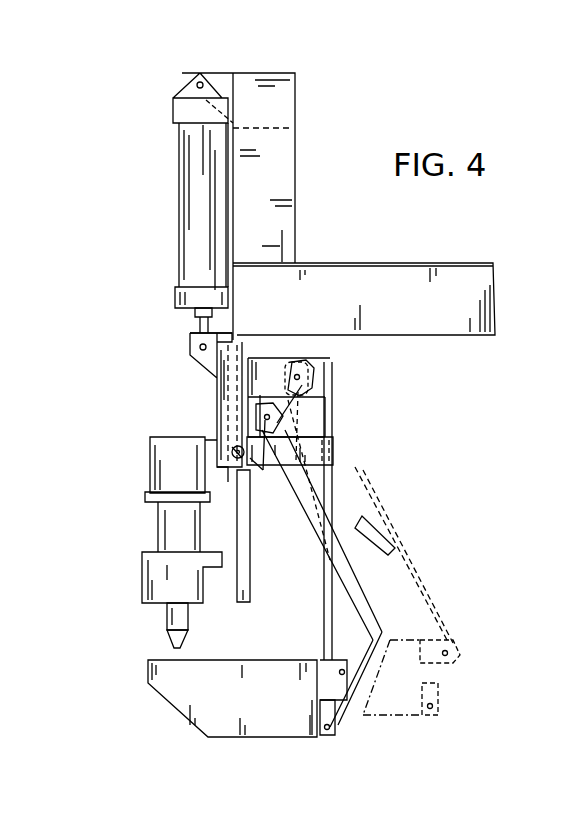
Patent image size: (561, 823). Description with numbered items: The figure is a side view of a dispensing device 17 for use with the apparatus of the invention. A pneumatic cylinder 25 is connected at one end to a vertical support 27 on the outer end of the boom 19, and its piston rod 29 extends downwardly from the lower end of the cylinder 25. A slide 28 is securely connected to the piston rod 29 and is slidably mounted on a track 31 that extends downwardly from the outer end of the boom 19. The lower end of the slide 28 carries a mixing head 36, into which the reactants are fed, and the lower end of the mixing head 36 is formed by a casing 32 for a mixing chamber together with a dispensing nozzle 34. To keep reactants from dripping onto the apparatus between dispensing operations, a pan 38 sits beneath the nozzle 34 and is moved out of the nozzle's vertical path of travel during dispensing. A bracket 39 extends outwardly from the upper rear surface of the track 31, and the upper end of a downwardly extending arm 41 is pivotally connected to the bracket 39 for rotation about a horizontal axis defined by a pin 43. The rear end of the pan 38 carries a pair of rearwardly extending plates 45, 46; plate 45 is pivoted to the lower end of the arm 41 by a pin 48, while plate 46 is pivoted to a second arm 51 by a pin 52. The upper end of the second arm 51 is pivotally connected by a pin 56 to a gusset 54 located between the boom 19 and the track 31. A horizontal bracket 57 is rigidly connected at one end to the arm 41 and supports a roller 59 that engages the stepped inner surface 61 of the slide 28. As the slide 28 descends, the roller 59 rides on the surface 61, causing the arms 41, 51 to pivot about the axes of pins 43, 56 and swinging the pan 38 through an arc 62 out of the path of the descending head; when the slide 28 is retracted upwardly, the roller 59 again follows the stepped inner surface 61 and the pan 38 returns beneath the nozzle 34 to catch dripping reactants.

The dispensing device 17 is at (145, 312).
The boom 19 is at (407, 272).
The pneumatic cylinder 25 is at (185, 175).
The vertical support 27 is at (288, 142).
The slide 28 is at (218, 388).
The piston rod 29 is at (197, 322).
The track 31 is at (247, 560).
The casing 32 is at (168, 620).
The dispensing nozzle 34 is at (175, 640).
The mixing head 36 is at (167, 525).
The pan 38 is at (262, 704).
The bracket 39 is at (265, 358).
The arm 41 is at (327, 415).
The pin 43 is at (289, 427).
The plate 45 is at (320, 660).
The plate 46 is at (328, 735).
The pin 48 is at (347, 677).
The second arm 51 is at (302, 512).
The pin 52 is at (337, 728).
The gusset 54 is at (321, 349).
The pin 56 is at (295, 482).
The horizontal bracket 57 is at (333, 455).
The roller 59 is at (228, 482).
The stepped inner surface 61 is at (236, 440).
The arc 62 is at (300, 638).